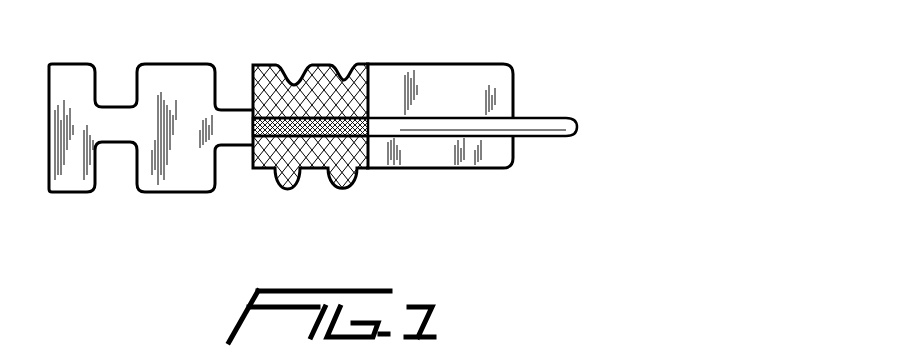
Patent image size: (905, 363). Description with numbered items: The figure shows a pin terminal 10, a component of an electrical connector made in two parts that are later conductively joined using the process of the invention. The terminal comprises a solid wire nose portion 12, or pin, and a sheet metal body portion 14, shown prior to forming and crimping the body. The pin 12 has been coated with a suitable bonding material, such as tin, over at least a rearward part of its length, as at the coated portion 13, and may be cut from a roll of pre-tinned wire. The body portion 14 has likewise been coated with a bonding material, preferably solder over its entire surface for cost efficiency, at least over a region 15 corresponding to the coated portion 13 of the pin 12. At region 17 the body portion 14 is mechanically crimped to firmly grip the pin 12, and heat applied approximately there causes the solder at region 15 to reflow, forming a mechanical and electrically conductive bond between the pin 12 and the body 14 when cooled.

The pin terminal 10 is at (222, 211).
The solid wire nose portion 12 is at (553, 138).
The coated portion of the pin 13 is at (313, 120).
The sheet metal body portion 14 is at (457, 169).
The coated region of the body 15 is at (337, 163).
The crimp region 17 is at (288, 194).